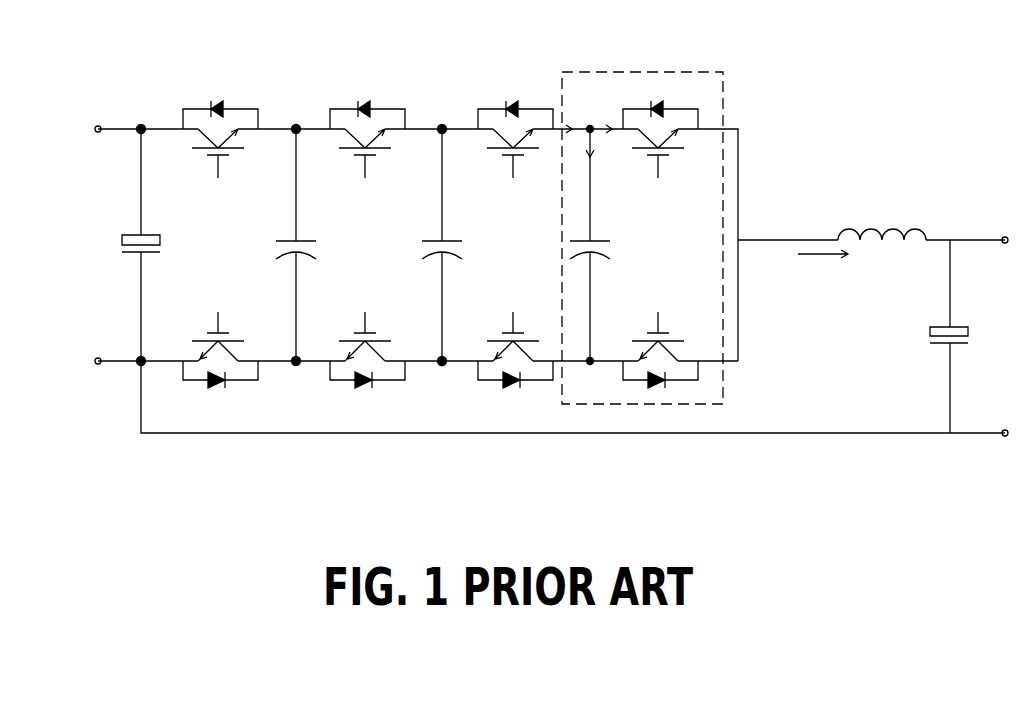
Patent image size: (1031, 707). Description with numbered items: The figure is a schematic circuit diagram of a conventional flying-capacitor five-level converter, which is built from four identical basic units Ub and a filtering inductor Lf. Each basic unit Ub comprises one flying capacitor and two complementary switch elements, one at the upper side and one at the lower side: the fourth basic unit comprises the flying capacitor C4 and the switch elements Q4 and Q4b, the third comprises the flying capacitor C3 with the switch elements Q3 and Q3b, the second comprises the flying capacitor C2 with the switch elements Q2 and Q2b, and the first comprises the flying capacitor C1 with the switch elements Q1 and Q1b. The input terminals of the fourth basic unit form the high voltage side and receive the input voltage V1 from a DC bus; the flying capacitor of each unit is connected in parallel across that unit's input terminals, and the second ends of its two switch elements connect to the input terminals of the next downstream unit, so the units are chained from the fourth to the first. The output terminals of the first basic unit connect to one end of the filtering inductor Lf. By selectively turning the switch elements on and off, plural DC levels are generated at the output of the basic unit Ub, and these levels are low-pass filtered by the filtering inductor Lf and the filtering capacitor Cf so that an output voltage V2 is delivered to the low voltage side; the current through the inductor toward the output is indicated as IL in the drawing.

The switch element Q1 is at (660, 139).
The switch element Q2 is at (514, 139).
The switch element Q3 is at (366, 139).
The switch element Q4 is at (216, 139).
The switch element Q1b is at (655, 350).
The switch element Q2b is at (508, 350).
The switch element Q3b is at (361, 350).
The switch element Q4b is at (211, 350).
The flying capacitor C1 is at (604, 245).
The flying capacitor C2 is at (456, 245).
The flying capacitor C3 is at (310, 245).
The flying capacitor C4 is at (155, 245).
The basic unit Ub is at (645, 72).
The inductor current IL is at (821, 233).
The filtering inductor Lf is at (882, 216).
The filtering capacitor Cf is at (930, 336).
The input voltage V1 is at (72, 244).
The output voltage V2 is at (1006, 338).